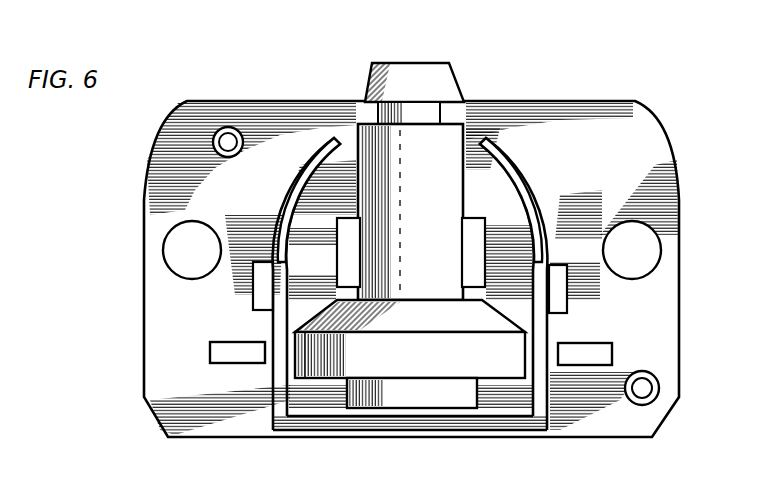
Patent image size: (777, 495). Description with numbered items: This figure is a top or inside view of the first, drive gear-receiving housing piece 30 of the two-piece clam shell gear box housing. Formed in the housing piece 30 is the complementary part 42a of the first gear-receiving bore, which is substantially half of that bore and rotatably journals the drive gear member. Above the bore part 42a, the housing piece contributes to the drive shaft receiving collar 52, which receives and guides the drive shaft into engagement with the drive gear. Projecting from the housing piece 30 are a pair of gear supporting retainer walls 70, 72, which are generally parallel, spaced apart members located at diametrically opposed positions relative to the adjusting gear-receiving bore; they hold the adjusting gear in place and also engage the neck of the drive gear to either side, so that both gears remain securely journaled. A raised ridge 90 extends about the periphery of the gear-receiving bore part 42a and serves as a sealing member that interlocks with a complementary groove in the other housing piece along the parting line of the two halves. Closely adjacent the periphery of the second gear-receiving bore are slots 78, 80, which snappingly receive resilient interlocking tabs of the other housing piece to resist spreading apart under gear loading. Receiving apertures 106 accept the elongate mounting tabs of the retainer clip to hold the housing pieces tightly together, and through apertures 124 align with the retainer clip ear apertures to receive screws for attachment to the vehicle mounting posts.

The first housing piece 30 is at (136, 384).
The drive shaft receiving collar 52 is at (436, 72).
The raised ridge 90 is at (310, 176).
The retainer wall 70 is at (338, 250).
The retainer wall 72 is at (480, 255).
The slot 78 is at (258, 297).
The slot 80 is at (560, 292).
The receiving aperture 106 is at (228, 352).
The through aperture 124 is at (172, 254).
The first gear-receiving bore part 42a is at (460, 360).